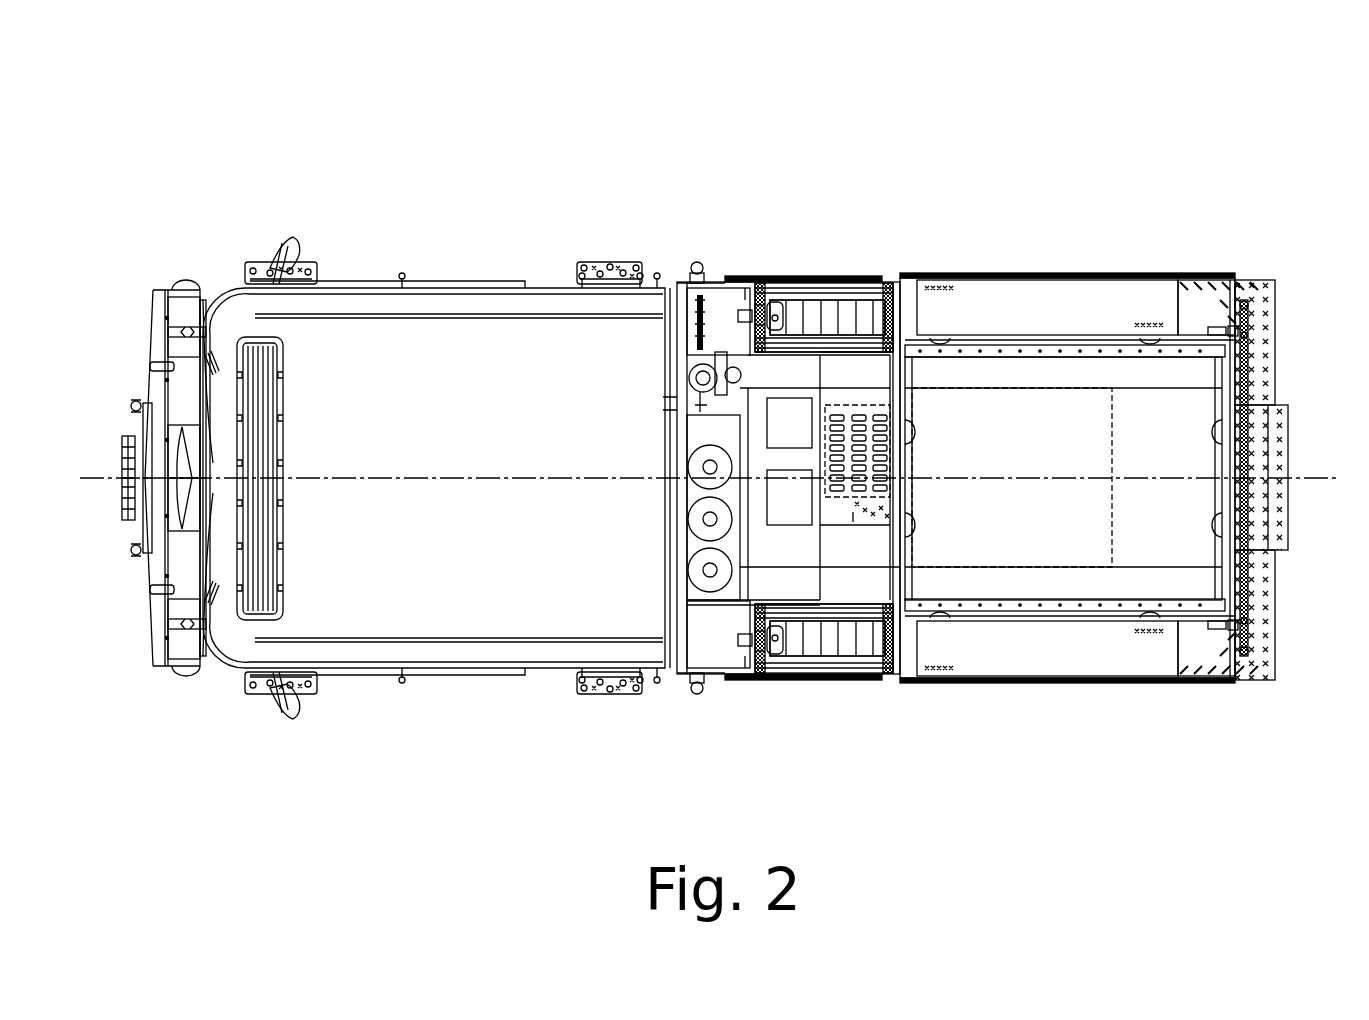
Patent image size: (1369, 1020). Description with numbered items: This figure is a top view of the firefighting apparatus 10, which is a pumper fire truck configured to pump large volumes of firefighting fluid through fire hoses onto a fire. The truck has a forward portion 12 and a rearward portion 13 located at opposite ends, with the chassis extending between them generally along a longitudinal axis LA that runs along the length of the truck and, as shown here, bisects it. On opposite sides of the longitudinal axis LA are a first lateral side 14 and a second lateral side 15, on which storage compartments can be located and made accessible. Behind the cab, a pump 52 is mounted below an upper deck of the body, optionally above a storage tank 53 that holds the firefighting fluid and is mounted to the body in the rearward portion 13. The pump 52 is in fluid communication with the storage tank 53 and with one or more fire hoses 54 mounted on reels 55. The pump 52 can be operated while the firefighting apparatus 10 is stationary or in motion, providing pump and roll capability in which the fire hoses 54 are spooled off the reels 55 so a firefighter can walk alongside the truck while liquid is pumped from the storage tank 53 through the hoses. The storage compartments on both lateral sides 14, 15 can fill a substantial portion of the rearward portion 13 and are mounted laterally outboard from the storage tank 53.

The firefighting apparatus 10 is at (121, 132).
The forward portion 12 is at (102, 362).
The rearward portion 13 is at (1320, 430).
The first lateral side 14 is at (828, 712).
The second lateral side 15 is at (641, 222).
The pump 52 is at (890, 403).
The storage tank 53 is at (1082, 575).
The fire hose 54 is at (820, 300).
The reel 55 is at (860, 300).
The longitudinal axis LA is at (90, 478).